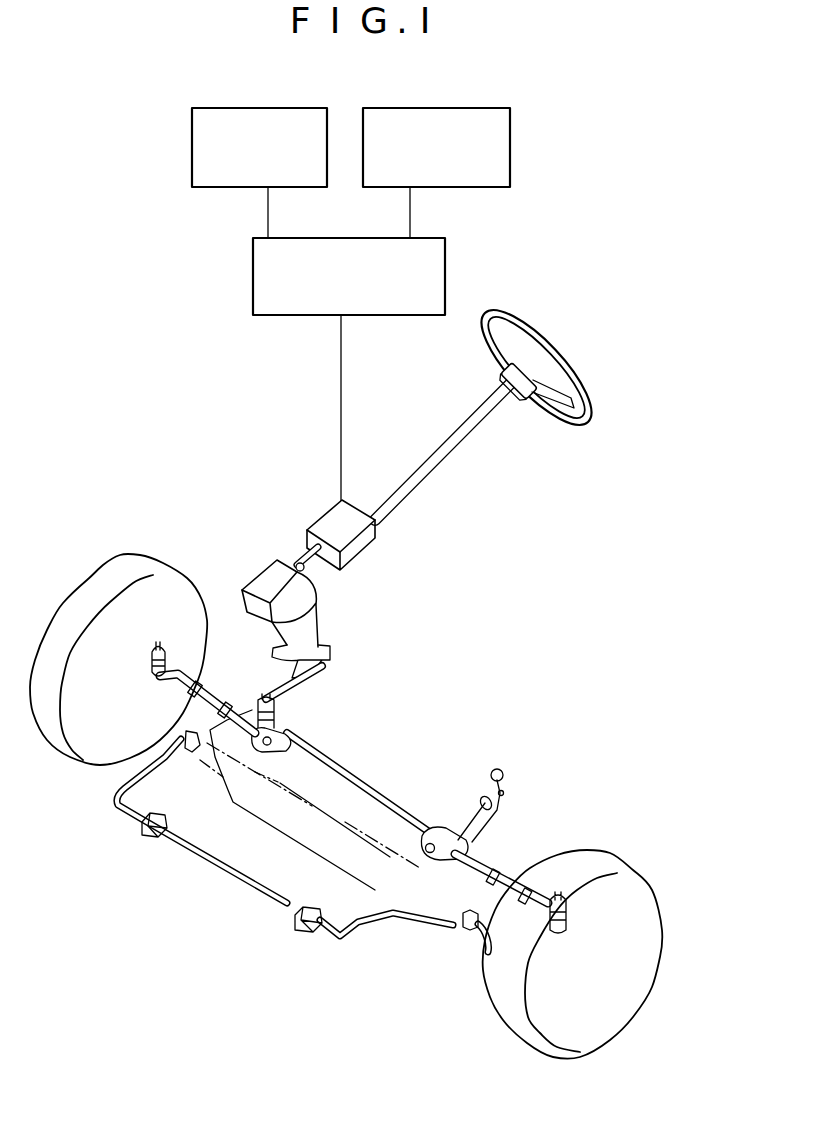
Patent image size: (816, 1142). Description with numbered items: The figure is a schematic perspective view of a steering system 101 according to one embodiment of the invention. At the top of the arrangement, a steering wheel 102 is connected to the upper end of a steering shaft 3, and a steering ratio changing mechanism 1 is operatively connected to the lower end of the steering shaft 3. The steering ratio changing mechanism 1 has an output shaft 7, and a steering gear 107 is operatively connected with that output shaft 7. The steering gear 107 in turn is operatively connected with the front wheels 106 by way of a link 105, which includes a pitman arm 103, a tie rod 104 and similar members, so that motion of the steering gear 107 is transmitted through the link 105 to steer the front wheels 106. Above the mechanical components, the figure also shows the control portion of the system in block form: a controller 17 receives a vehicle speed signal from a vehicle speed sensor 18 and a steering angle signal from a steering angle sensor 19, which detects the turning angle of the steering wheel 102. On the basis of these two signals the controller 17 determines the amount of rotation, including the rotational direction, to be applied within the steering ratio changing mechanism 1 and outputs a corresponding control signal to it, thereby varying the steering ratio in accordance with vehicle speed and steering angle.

The steering system 101 is at (227, 458).
The vehicle speed sensor 18 is at (230, 108).
The steering angle sensor 19 is at (458, 108).
The controller 17 is at (446, 263).
The steering wheel 102 is at (585, 425).
The steering shaft 3 is at (463, 440).
The steering ratio changing mechanism 1 is at (380, 541).
The output shaft 7 is at (317, 562).
The steering gear 107 is at (331, 628).
The pitman arm 103 is at (304, 690).
The link 105 is at (354, 757).
The tie rod 104 is at (388, 794).
The front wheels 106 is at (173, 577).